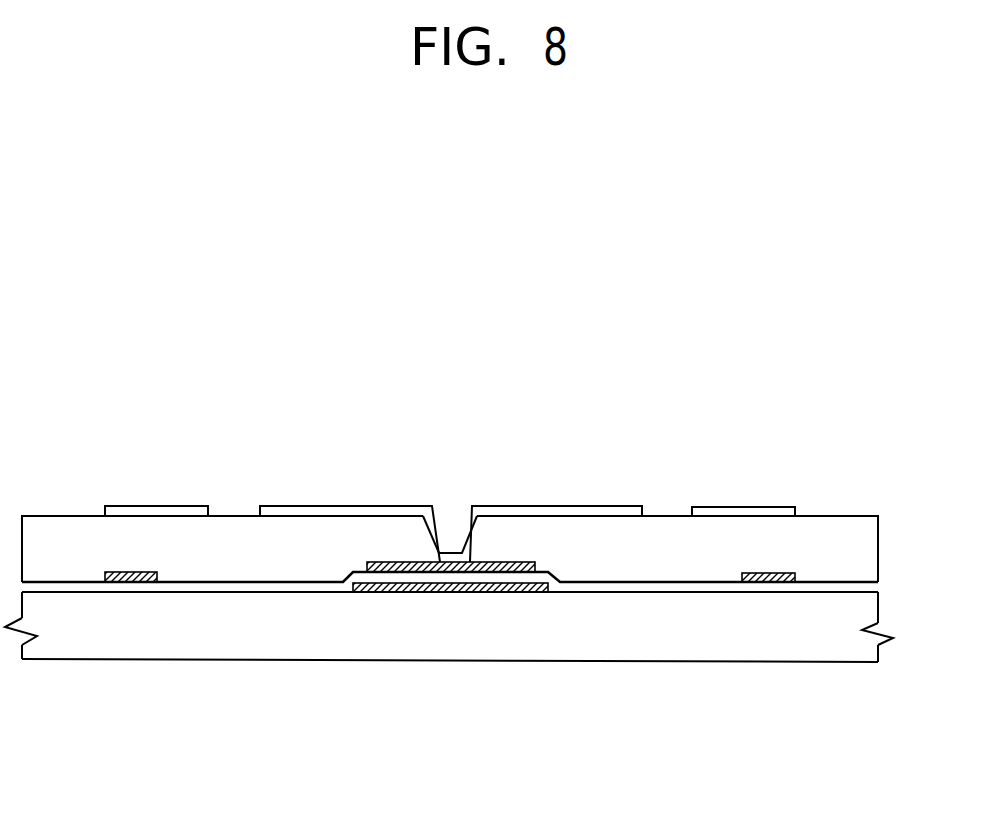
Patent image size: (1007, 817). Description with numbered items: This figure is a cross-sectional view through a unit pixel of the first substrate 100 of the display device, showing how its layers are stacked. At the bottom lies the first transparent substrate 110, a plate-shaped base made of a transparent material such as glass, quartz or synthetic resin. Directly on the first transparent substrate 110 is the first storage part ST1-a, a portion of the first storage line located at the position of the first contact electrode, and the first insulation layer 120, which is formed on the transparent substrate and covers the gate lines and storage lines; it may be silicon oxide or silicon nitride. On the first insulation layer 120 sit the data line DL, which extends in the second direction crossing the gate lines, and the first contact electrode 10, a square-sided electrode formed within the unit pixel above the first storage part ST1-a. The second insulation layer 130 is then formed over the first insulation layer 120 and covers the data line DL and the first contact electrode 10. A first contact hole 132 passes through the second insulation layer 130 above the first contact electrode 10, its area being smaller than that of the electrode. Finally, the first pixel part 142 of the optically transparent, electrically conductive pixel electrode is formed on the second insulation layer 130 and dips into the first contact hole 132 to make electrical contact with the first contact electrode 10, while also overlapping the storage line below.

The first substrate 100 is at (162, 406).
The first transparent substrate 110 is at (197, 645).
The first insulation layer 120 is at (280, 588).
The first storage part ST1-a is at (393, 595).
The first contact electrode 10 is at (497, 568).
The second insulation layer 130 is at (623, 555).
The first contact hole 132 is at (446, 522).
The first pixel part 142 is at (580, 514).
The data line DL is at (771, 582).